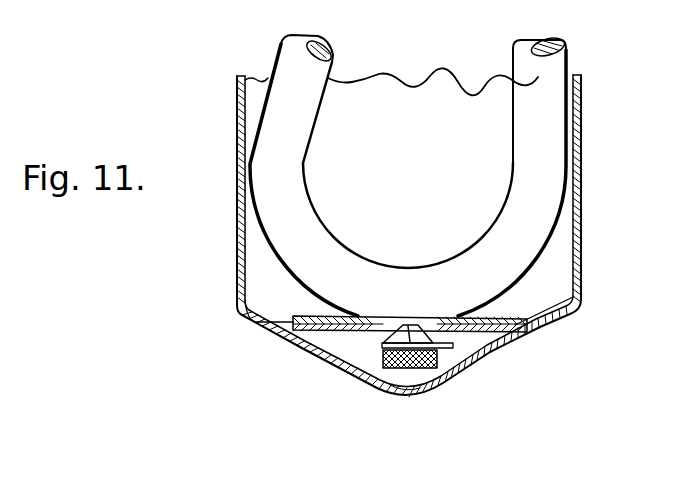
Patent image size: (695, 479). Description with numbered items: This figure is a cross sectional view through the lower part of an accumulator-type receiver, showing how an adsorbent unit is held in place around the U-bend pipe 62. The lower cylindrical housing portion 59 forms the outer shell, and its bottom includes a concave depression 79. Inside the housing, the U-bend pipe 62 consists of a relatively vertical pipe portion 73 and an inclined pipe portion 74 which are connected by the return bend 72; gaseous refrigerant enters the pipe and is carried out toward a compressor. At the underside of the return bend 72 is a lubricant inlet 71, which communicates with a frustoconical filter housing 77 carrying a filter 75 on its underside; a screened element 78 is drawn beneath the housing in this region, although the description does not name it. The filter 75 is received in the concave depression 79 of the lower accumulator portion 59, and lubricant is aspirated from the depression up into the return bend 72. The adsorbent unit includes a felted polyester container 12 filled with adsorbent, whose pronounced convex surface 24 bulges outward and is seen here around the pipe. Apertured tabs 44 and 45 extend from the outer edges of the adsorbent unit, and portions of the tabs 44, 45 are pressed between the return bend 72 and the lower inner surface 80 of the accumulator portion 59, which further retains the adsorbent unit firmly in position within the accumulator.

The container 12 is at (423, 93).
The pronounced convex surface 24 is at (422, 147).
The tab 44 is at (340, 360).
The tab 45 is at (355, 313).
The lower cylindrical housing portion 59 is at (235, 97).
The U-bend pipe 62 is at (572, 54).
The lubricant inlet 71 is at (409, 328).
The return bend 72 is at (418, 267).
The vertical pipe portion 73 is at (557, 67).
The inclined pipe portion 74 is at (287, 52).
The filter 75 is at (397, 392).
The frustoconical filter housing 77 is at (412, 324).
The filter 78 is at (372, 370).
The concave depression 79 is at (460, 380).
The lower inner surface 80 is at (272, 312).